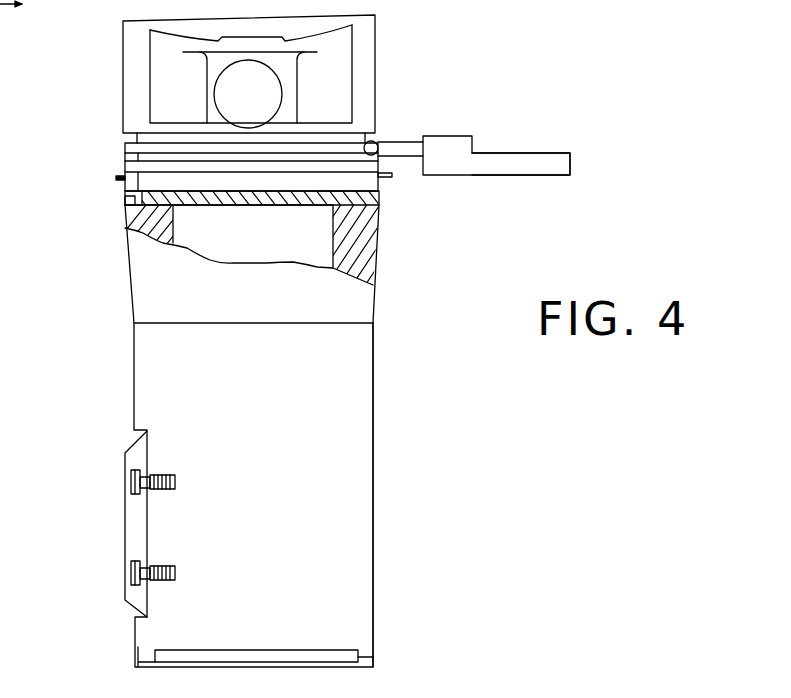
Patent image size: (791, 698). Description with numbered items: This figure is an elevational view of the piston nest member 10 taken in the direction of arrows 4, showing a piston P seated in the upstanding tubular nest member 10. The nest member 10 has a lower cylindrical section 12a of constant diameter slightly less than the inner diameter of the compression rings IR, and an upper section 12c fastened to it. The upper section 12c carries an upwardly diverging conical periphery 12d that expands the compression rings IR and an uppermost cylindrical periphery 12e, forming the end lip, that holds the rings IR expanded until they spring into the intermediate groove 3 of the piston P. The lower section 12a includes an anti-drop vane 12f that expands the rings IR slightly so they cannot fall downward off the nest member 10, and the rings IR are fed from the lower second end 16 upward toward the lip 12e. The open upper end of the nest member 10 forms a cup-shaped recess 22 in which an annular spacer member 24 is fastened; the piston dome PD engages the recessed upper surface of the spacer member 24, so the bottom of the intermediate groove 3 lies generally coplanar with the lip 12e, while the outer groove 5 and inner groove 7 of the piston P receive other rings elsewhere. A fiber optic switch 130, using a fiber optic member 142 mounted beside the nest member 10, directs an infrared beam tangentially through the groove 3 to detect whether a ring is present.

The arrows 4— 4 is at (26, 18).
The piston P is at (123, 55).
The inner piston groove 7 is at (125, 136).
The intermediate circumferential groove 3 is at (124, 153).
The uppermost cylindrical periphery 12e is at (124, 158).
The intermediate compression ring IR is at (116, 178).
The cup-shaped recess 22 is at (122, 201).
The upper section 12c is at (121, 227).
The upwardly diverging conical periphery 12d is at (137, 252).
The piston nest member 10 is at (133, 368).
The anti-drop vane 12f is at (132, 532).
The lower cylindrical section 12a is at (352, 470).
The lower second end 16 is at (366, 643).
The fiber optic switch 130 is at (433, 129).
The second fiber optic member 142 is at (447, 163).
The outer piston groove 5 is at (380, 188).
The annular spacer member 24 is at (382, 182).
The piston dome PD is at (291, 204).